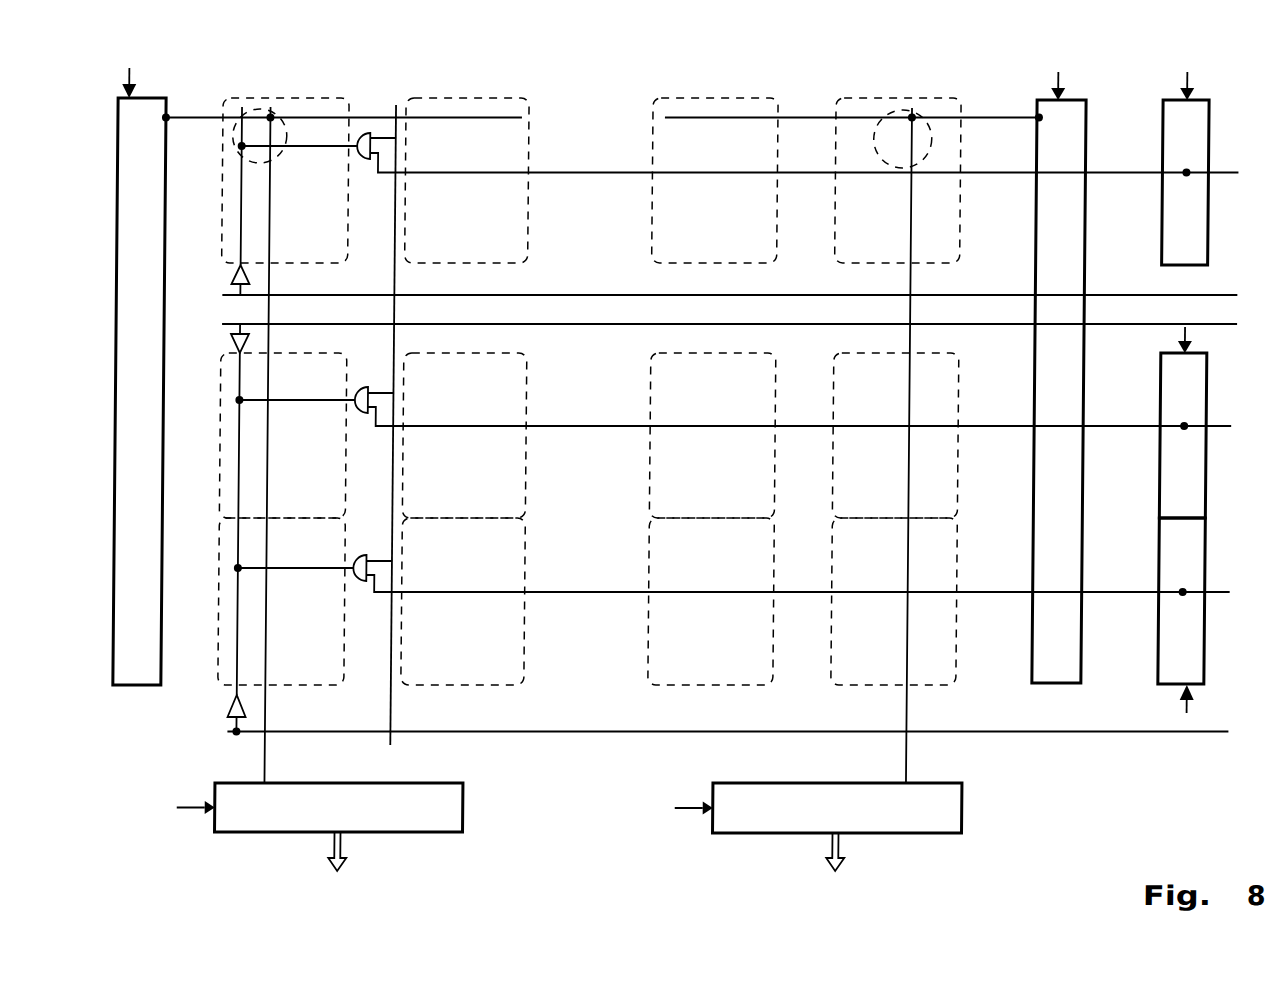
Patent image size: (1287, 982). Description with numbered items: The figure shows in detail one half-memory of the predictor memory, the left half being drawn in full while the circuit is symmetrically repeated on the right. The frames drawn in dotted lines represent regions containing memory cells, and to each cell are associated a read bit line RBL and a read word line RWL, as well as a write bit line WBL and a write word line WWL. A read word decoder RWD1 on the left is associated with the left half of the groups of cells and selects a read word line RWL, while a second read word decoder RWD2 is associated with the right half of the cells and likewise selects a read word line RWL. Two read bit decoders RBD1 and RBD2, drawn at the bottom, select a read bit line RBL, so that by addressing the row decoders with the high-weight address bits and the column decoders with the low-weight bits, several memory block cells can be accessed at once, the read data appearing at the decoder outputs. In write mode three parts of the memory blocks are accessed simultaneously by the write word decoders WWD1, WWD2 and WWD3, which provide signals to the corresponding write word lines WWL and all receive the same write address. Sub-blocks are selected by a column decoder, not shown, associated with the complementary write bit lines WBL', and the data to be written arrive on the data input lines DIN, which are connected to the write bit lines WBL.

The read word decoder RWD1 is at (129, 363).
The second read word decoder RWD2 is at (1066, 364).
The write word decoder WWD1 is at (1186, 155).
The write word decoder WWD2 is at (1178, 412).
The write word decoder WWD3 is at (1199, 626).
The read bit decoder RBD1 is at (286, 843).
The read bit decoder RBD2 is at (779, 844).
The read word line RWL is at (187, 117).
The write bit line WBL is at (207, 421).
The read bit line RBL is at (272, 207).
The complementary write bit line WBL' is at (431, 425).
The write word line WWL is at (291, 147).
The data input lines DIN is at (741, 518).